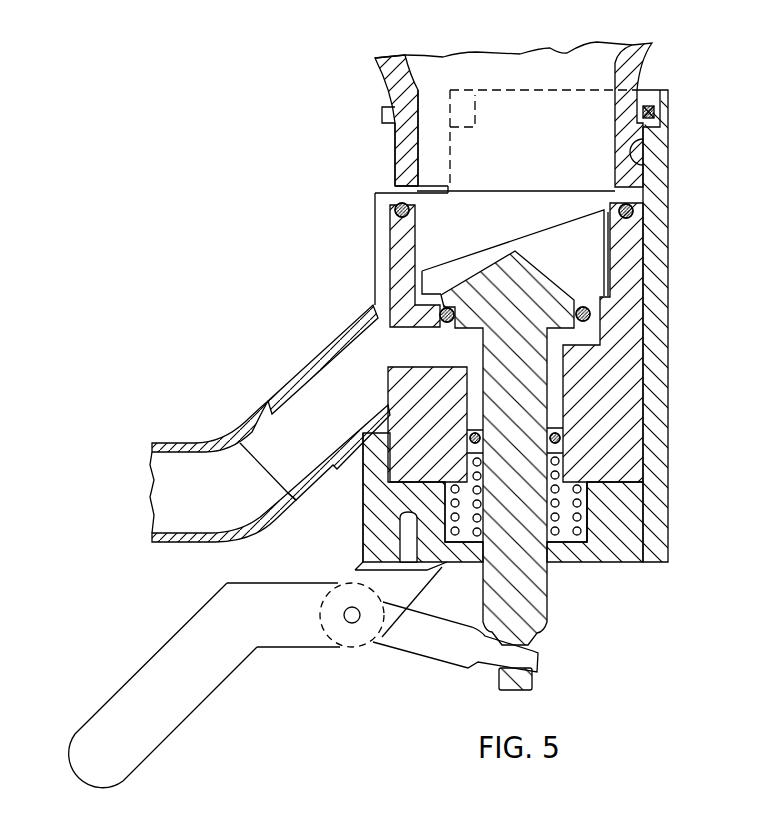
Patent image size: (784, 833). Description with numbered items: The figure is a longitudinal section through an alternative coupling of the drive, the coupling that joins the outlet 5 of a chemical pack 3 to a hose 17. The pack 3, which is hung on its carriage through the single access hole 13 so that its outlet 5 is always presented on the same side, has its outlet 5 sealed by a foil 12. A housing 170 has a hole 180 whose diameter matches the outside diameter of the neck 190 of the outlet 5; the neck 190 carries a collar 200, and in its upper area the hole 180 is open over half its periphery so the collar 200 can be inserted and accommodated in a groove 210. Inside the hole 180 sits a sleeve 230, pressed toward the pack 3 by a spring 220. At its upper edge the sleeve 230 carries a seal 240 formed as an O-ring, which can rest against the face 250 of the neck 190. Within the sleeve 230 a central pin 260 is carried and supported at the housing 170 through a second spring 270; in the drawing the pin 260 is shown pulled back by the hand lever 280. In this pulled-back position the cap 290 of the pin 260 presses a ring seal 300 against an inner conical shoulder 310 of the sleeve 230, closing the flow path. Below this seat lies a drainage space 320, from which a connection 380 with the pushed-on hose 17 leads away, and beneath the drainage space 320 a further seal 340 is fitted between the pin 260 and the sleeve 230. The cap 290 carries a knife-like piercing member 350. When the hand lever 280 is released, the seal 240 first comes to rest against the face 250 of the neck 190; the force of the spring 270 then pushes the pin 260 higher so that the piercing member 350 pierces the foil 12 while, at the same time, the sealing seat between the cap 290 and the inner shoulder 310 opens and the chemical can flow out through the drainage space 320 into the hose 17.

The pack 3 is at (388, 78).
The outlet 5 is at (503, 183).
The foil 12 is at (510, 192).
The access hole 13 is at (288, 186).
The hose 17 is at (197, 463).
The housing 170 is at (643, 510).
The hole 180 is at (636, 163).
The neck 190 is at (405, 145).
The collar 200 is at (382, 112).
The groove 210 is at (663, 90).
The spring 220 is at (588, 542).
The sleeve 230 is at (392, 237).
The seal 240 is at (395, 188).
The face 250 is at (637, 200).
The central pin 260 is at (583, 350).
The spring 270 is at (557, 545).
The hand lever 280 is at (205, 683).
The cap 290 is at (497, 273).
The ring seal 300 is at (440, 310).
The inner conical shoulder 310 is at (602, 303).
The drainage space 320 is at (372, 327).
The seal 340 is at (560, 438).
The piercing member 350 is at (590, 243).
The connection 380 is at (313, 387).